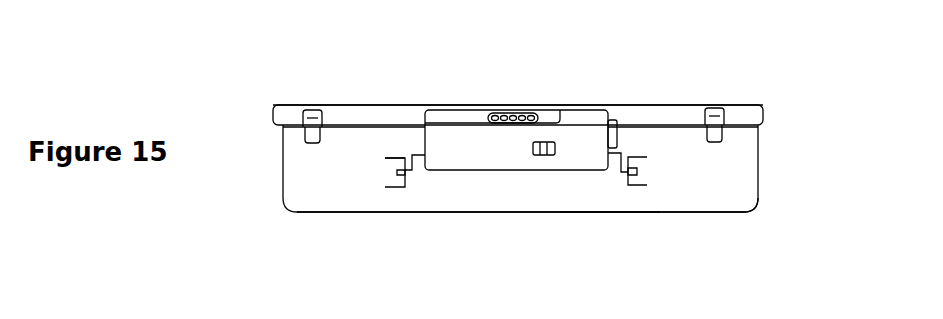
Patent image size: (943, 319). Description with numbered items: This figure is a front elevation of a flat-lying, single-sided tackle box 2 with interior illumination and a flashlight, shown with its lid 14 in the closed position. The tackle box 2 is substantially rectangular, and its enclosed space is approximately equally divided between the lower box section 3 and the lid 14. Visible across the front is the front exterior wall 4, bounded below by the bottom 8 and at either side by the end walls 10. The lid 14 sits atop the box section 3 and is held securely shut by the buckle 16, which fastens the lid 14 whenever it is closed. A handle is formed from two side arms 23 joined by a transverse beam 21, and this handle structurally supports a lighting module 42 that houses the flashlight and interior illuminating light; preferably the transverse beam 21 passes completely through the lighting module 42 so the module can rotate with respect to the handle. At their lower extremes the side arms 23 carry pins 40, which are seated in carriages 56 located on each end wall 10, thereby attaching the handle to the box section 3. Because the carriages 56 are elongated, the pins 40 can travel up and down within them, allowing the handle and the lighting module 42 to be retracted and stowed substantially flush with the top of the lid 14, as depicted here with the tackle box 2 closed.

The tackle box 2 is at (342, 84).
The box section 3 is at (768, 208).
The front exterior wall 4 is at (527, 190).
The bottom 8 is at (605, 212).
The end walls 10 is at (283, 165).
The lid 14 is at (765, 106).
The buckle 16 is at (302, 112).
The transverse beam 21 is at (618, 150).
The side arms 23 is at (405, 158).
The pins 40 is at (406, 187).
The lighting module 42 is at (567, 110).
The carriages 56 is at (400, 187).